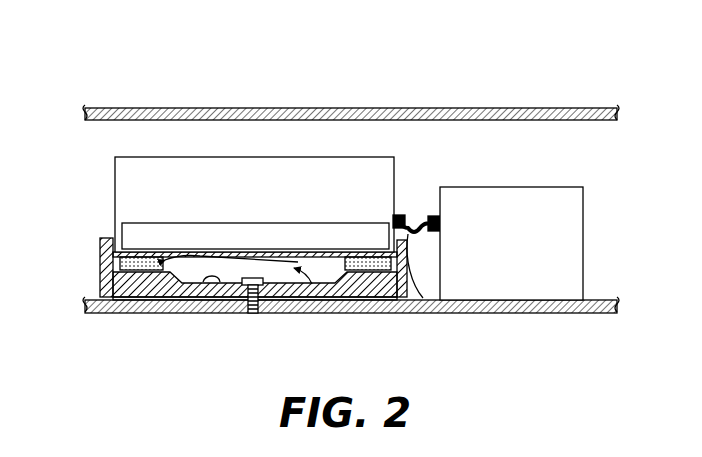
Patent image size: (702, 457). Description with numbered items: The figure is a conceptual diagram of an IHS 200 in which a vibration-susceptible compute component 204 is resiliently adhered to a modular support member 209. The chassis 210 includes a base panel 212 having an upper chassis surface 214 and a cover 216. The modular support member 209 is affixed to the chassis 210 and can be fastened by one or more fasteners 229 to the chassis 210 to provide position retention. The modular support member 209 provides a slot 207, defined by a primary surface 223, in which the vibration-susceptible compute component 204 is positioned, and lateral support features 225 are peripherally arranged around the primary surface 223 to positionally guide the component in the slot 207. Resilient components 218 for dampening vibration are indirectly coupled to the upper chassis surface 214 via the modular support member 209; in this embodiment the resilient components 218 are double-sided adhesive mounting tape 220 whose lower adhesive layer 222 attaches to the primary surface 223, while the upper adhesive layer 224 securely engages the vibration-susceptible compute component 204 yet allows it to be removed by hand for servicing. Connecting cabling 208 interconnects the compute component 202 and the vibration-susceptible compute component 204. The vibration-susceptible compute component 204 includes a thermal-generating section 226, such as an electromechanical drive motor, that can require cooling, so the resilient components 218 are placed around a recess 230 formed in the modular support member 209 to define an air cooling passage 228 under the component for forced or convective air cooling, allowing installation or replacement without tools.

The IHS 200 is at (91, 61).
The chassis 210 is at (159, 85).
The cover 216 is at (259, 107).
The slot 207 is at (399, 216).
The upper adhesive layer 224 is at (108, 250).
The resilient components 218 is at (100, 258).
The lower adhesive layer 222 is at (100, 274).
The lateral support features 225 is at (100, 280).
The modular support member 209 is at (98, 289).
The primary surface 223 is at (110, 314).
The base panel 212 is at (128, 314).
The upper chassis surface 214 is at (173, 314).
The recess 230 is at (243, 290).
The fasteners 229 is at (249, 314).
The air cooling passage 228 is at (316, 310).
The double-sided adhesive mounting tape 220 is at (312, 284).
The connecting cabling 208 is at (411, 314).
The vibration-susceptible compute component 204 is at (254, 204).
The thermal-generating section 226 is at (255, 236).
The compute component 202 is at (511, 243).